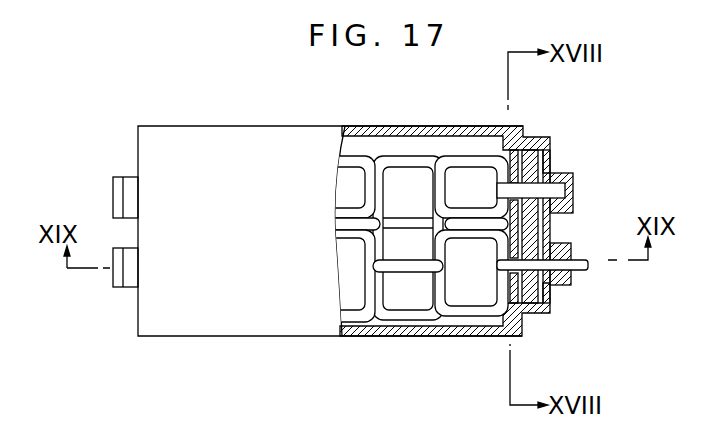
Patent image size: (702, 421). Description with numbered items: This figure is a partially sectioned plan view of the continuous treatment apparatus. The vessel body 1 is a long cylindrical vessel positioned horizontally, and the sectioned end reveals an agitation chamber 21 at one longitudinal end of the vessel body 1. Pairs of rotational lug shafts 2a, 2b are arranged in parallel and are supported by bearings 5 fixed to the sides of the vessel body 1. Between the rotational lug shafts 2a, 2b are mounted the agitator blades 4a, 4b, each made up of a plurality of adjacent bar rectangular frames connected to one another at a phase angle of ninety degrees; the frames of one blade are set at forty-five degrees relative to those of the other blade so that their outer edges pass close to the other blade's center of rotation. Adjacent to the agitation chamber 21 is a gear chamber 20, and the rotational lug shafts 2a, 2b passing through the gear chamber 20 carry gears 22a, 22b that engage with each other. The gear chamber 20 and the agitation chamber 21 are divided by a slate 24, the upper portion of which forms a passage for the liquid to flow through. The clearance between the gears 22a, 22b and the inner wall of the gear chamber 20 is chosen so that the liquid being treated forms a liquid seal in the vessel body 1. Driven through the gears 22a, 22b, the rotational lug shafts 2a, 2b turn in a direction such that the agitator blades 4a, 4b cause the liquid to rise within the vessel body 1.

The vessel body 1 is at (268, 126).
The agitator blade 4b is at (356, 152).
The agitator blade 4a is at (432, 305).
The agitation chamber 21 is at (410, 138).
The rotational lug shaft 2b is at (492, 185).
The rotational lug shaft 2a is at (588, 268).
The gear 22b is at (548, 160).
The gear 22a is at (553, 306).
The gear chamber 20 is at (547, 230).
The slate 24 is at (510, 315).
The bearing 5 is at (125, 172).